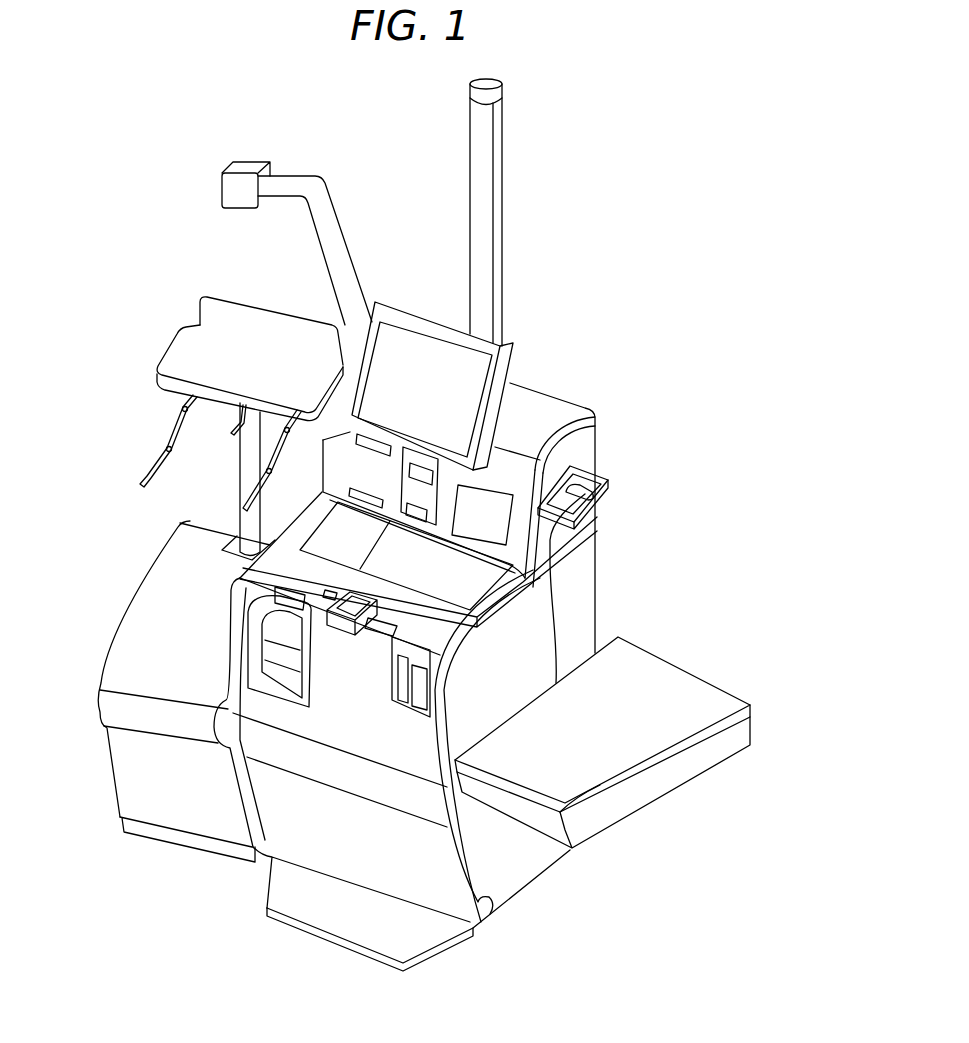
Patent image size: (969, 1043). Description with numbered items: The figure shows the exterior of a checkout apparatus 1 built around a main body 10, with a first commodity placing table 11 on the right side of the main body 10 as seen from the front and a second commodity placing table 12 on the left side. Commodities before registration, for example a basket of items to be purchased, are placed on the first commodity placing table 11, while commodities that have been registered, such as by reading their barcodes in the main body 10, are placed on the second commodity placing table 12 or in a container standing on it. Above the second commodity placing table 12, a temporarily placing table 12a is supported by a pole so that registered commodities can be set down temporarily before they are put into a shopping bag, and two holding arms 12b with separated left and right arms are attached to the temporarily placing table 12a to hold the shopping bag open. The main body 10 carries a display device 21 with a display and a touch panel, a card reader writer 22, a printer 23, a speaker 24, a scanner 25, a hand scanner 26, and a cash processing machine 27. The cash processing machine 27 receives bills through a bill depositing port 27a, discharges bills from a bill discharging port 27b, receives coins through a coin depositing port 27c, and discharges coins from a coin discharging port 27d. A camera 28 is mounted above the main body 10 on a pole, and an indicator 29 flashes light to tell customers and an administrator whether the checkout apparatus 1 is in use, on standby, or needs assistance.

The checkout apparatus 1 is at (563, 211).
The main body 10 is at (512, 885).
The first commodity placing table 11 is at (634, 670).
The second commodity placing table 12 is at (165, 678).
The temporarily placing table 12a is at (250, 356).
The holding arms 12b is at (240, 492).
The display device 21 is at (472, 386).
The card reader writer 22 is at (420, 490).
The printer 23 is at (372, 447).
The speaker 24 is at (397, 507).
The scanner 25 is at (490, 510).
The hand scanner 26 is at (592, 503).
The cash processing machine 27 is at (377, 648).
The bill depositing port 27a is at (428, 683).
The bill discharging port 27b is at (400, 703).
The coin depositing port 27c is at (340, 625).
The coin discharging port 27d is at (278, 626).
The camera 28 is at (252, 172).
The indicator 29 is at (492, 102).